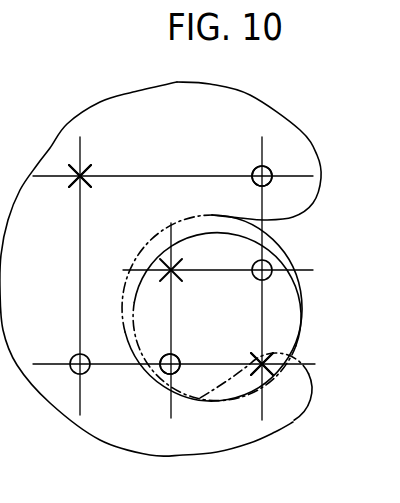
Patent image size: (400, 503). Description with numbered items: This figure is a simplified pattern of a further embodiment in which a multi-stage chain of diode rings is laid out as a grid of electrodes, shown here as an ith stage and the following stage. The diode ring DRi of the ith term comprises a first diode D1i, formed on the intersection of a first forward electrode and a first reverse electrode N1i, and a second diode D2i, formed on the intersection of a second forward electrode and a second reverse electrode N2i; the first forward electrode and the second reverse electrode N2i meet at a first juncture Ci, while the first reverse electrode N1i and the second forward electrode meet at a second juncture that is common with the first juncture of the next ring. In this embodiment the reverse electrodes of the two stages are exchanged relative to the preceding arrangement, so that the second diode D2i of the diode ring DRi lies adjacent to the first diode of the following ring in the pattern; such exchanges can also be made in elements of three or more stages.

The diode ring of ith term DRi is at (307, 127).
The second reverse electrode N2i is at (173, 266).
The first reverse electrode N1i is at (261, 269).
The first diode D1i is at (253, 183).
The second diode D2i is at (84, 355).
The first juncture Ci is at (83, 180).